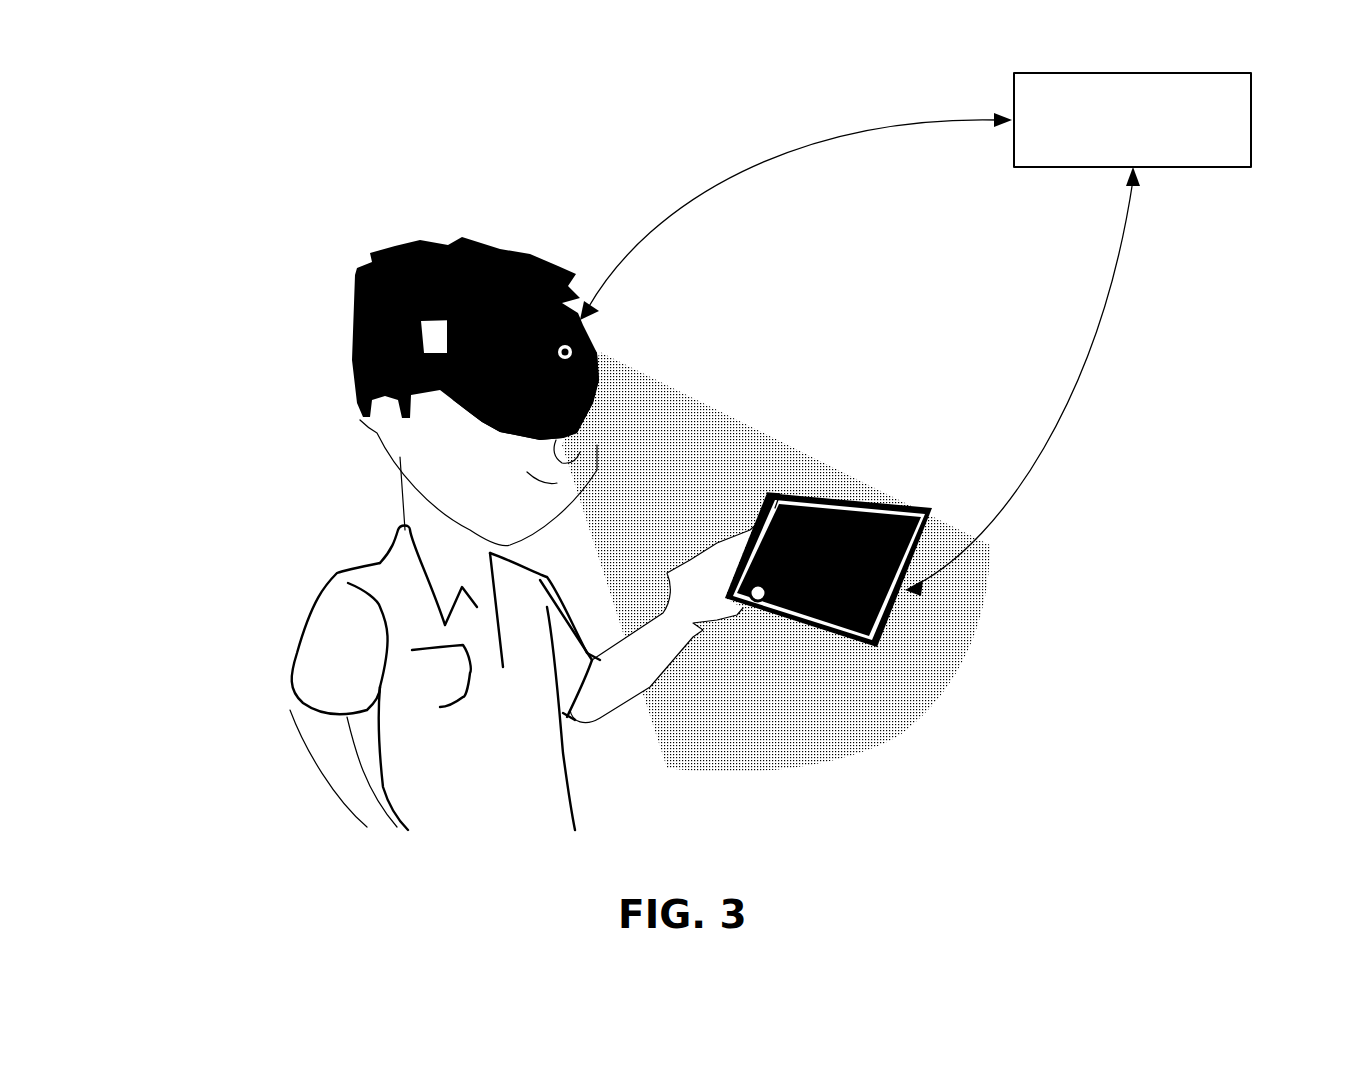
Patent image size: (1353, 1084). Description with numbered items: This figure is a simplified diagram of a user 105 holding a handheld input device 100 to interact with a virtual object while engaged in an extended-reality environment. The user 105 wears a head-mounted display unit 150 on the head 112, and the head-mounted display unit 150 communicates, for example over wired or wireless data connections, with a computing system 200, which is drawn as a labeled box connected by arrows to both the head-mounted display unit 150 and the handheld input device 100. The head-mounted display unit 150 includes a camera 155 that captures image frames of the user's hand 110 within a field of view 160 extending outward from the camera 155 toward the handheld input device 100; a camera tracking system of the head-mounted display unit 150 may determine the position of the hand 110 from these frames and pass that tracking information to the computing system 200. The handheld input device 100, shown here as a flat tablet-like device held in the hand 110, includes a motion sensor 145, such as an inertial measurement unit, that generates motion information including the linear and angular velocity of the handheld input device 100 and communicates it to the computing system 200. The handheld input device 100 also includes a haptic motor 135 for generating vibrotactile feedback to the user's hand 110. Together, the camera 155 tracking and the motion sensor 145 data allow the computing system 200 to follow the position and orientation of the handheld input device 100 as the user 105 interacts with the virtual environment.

The handheld input device 100 is at (857, 507).
The user 105 is at (265, 652).
The hand 110 is at (682, 583).
The head 112 is at (400, 262).
The haptic motor 135 is at (757, 602).
The motion sensor 145 is at (780, 493).
The head-mounted display unit 150 is at (476, 414).
The camera 155 is at (572, 353).
The field of view 160 is at (698, 415).
The computing system 200 is at (915, 334).